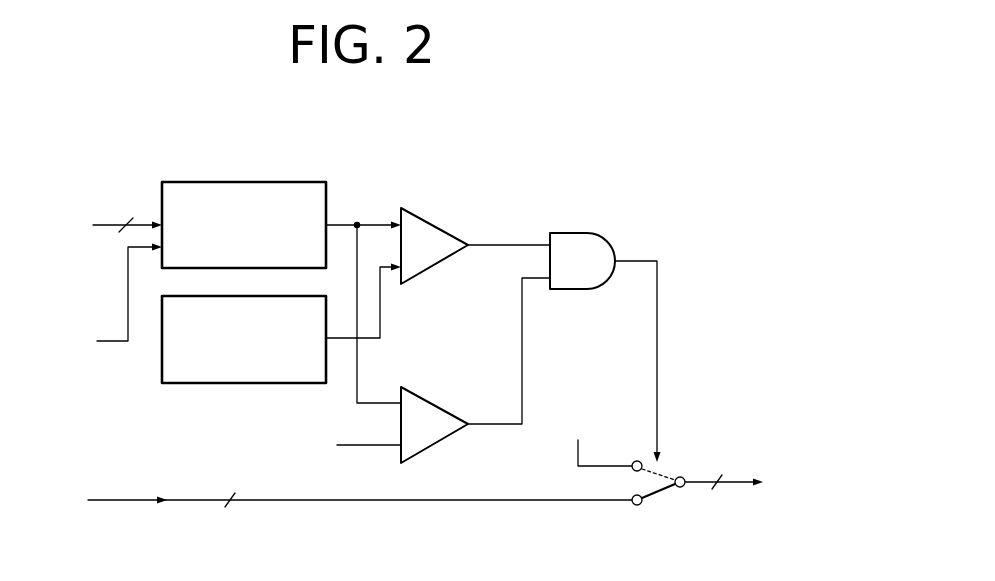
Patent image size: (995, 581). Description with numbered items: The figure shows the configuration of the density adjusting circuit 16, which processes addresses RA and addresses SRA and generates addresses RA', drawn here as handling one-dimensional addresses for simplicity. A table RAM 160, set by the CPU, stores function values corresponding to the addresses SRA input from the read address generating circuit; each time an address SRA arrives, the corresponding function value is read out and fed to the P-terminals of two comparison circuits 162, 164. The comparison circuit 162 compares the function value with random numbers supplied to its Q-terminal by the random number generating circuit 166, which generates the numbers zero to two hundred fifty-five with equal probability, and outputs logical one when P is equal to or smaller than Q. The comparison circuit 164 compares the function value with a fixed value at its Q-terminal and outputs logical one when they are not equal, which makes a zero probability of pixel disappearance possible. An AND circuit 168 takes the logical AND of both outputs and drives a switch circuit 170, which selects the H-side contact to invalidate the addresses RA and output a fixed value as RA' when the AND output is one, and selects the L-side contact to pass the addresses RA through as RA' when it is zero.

The density adjusting circuit 16 is at (470, 135).
The table RAM 160 is at (268, 182).
The comparison circuit 162 is at (448, 261).
The comparison circuit 164 is at (450, 437).
The random number generating circuit 166 is at (212, 383).
The AND circuit 168 is at (575, 289).
The switch circuit 170 is at (655, 490).